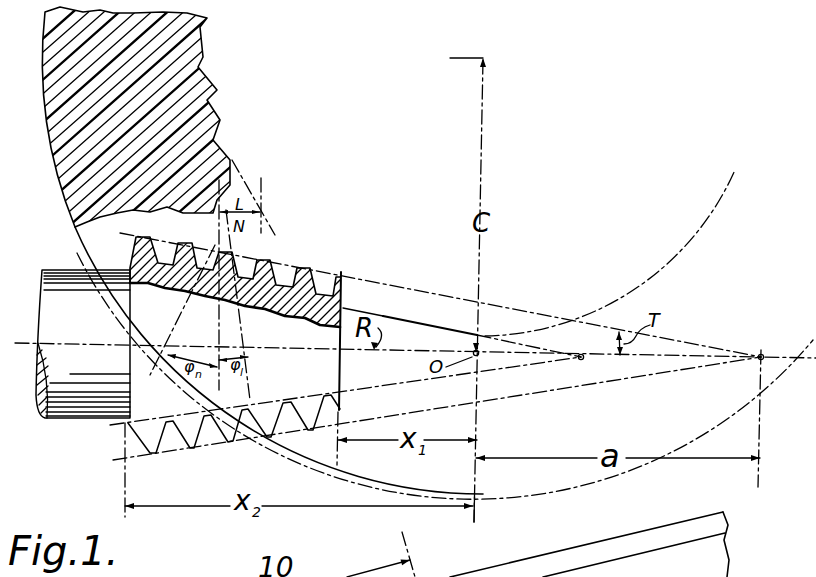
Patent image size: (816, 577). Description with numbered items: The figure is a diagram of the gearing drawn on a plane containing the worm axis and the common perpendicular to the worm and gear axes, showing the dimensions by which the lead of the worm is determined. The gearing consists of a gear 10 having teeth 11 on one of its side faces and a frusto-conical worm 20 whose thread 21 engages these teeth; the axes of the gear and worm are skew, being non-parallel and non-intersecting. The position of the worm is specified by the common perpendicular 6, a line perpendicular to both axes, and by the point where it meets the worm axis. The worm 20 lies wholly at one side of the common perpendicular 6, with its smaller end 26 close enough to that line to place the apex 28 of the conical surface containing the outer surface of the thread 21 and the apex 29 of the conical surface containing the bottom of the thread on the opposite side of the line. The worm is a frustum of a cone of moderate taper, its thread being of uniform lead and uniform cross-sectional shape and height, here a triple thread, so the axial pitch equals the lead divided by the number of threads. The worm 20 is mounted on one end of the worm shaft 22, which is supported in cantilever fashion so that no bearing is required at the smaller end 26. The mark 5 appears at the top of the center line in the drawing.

The reference mark 5 is at (445, 93).
The common perpendicular 6 is at (486, 146).
The gear 10 is at (220, 117).
The teeth 11 is at (200, 72).
The worm 20 is at (146, 400).
The thread 21 is at (322, 271).
The worm shaft 22 is at (92, 334).
The smaller end 26 is at (341, 290).
The apex 28 is at (761, 354).
The apex 29 is at (581, 360).